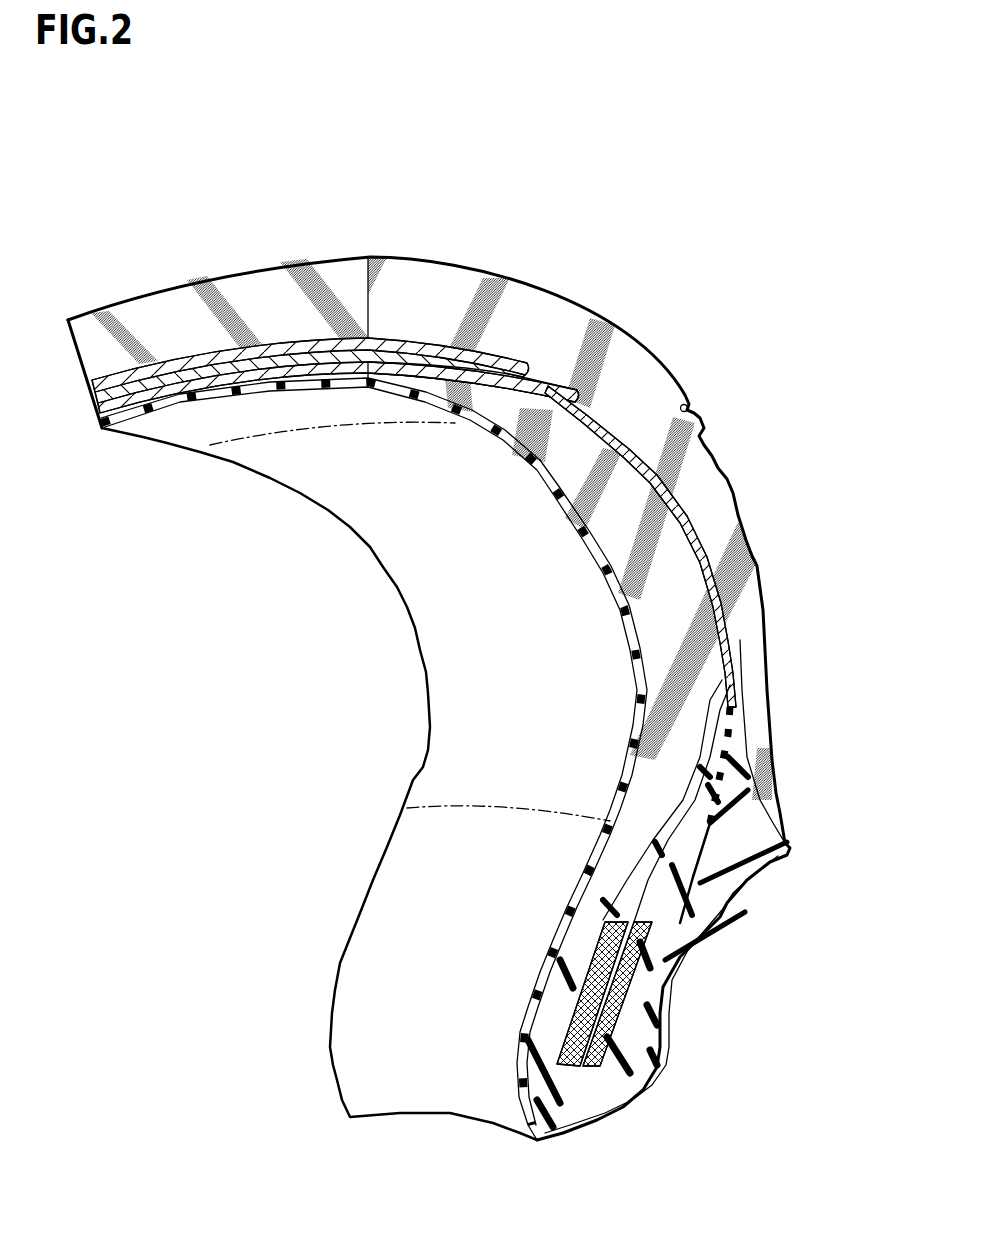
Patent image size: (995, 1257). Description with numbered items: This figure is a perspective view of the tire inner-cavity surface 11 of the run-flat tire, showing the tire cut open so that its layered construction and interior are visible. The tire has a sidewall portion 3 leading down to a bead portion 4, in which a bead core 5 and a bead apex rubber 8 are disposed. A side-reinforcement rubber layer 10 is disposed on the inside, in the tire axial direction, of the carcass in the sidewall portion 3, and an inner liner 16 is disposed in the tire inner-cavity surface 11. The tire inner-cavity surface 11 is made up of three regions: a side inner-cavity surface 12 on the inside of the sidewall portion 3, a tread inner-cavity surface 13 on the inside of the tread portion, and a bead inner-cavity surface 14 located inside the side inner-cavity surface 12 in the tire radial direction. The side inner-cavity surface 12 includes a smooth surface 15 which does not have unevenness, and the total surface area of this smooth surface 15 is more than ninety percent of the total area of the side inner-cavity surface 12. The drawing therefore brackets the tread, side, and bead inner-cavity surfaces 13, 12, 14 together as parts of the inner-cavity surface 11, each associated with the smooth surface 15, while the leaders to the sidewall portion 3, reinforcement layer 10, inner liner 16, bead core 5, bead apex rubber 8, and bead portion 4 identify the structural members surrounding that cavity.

The sidewall portion 3 is at (757, 563).
The bead portion 4 is at (672, 1000).
The bead core 5 is at (612, 990).
The bead apex rubber 8 is at (607, 1075).
The side-reinforcement rubber layer 10 is at (647, 520).
The tire inner-cavity surface 11 is at (196, 601).
The side inner-cavity surface 12 is at (483, 592).
The tread inner-cavity surface 13 is at (258, 415).
The bead inner-cavity surface 14 is at (385, 977).
The smooth surface 15 is at (410, 621).
The inner liner 16 is at (633, 645).